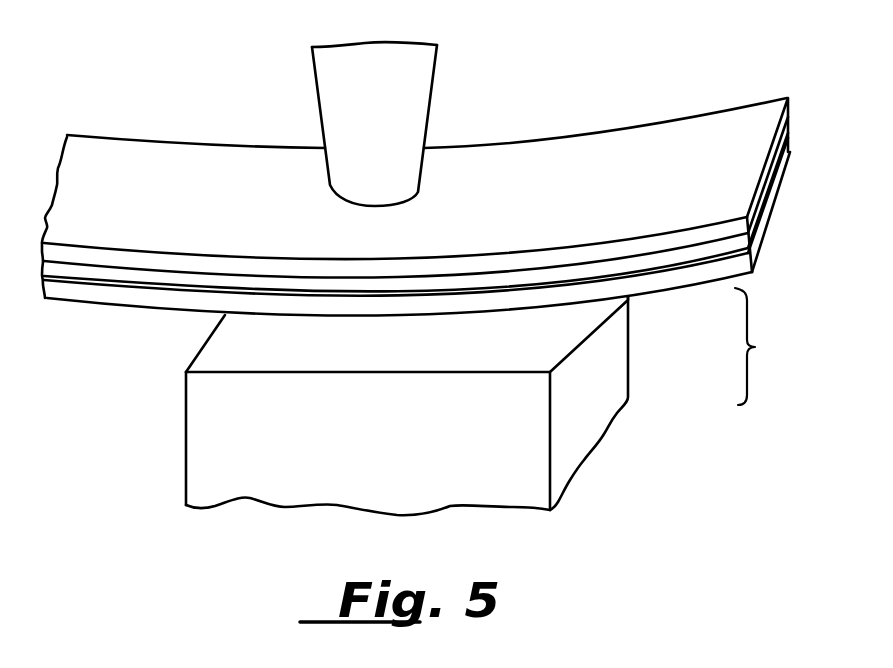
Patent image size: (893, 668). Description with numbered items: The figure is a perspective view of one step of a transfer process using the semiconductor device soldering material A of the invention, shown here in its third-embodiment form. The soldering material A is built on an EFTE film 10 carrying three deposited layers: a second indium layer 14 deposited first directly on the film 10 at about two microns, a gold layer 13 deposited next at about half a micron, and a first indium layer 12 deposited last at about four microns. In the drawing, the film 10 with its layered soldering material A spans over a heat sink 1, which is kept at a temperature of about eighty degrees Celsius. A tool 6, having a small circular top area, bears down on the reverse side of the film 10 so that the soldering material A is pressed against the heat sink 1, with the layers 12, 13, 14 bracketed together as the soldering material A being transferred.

The heat sink 1 is at (530, 470).
The tool 6 is at (417, 87).
The EFTE film 10 is at (610, 157).
The first indium layer 12 is at (640, 287).
The gold layer 13 is at (660, 270).
The second indium layer 14 is at (672, 257).
The semiconductor device soldering material A is at (754, 346).